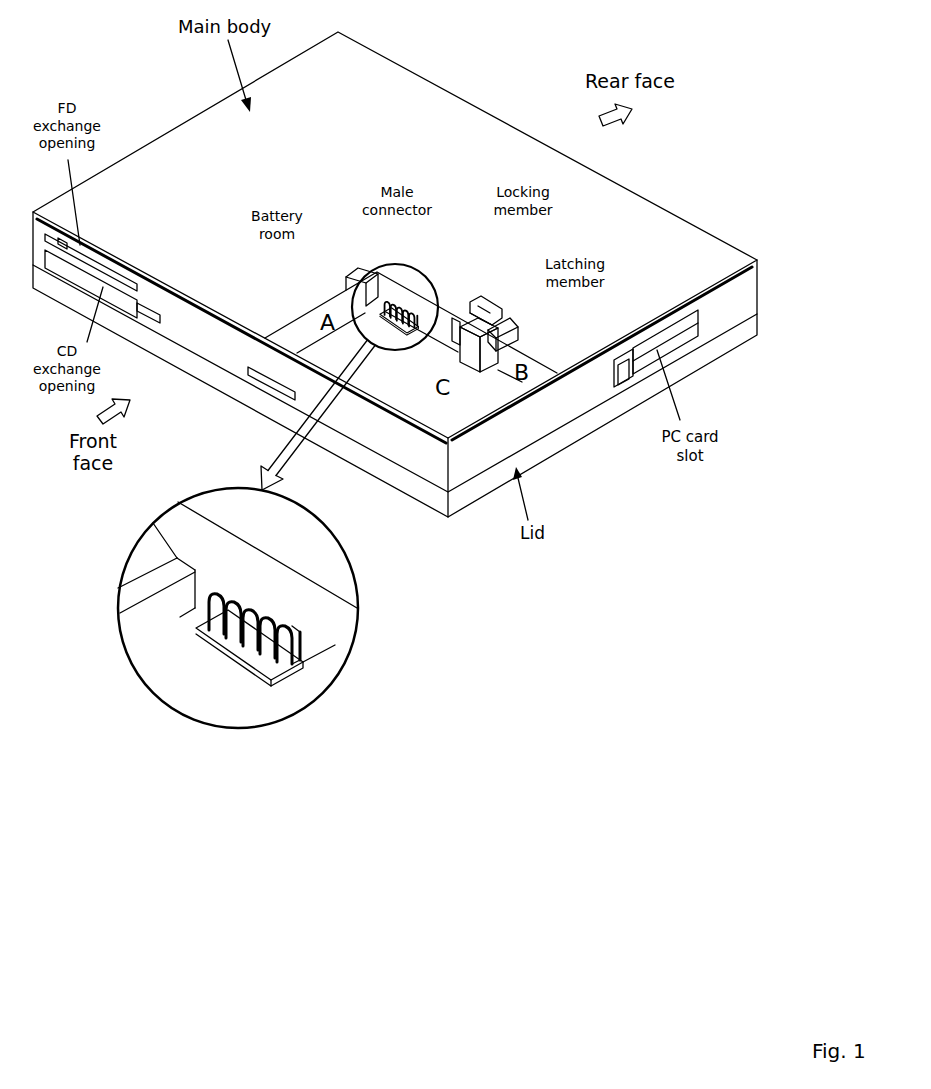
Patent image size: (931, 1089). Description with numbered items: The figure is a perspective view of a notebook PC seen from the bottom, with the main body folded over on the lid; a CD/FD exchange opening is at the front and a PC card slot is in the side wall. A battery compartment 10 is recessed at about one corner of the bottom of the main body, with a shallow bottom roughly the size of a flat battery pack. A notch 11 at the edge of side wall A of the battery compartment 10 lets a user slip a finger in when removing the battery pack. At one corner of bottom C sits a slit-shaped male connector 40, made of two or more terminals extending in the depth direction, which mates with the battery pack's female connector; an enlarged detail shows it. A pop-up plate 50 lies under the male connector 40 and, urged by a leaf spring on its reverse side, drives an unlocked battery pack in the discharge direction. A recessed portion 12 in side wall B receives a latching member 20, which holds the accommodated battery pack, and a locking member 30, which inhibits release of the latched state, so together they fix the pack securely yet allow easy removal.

The battery compartment 10 is at (298, 320).
The notch 11 is at (362, 282).
The recessed portion 12 is at (460, 300).
The latching member 20 is at (513, 324).
The locking member 30 is at (495, 300).
The male connector 40 is at (390, 288).
The pop-up plate 50 is at (401, 329).